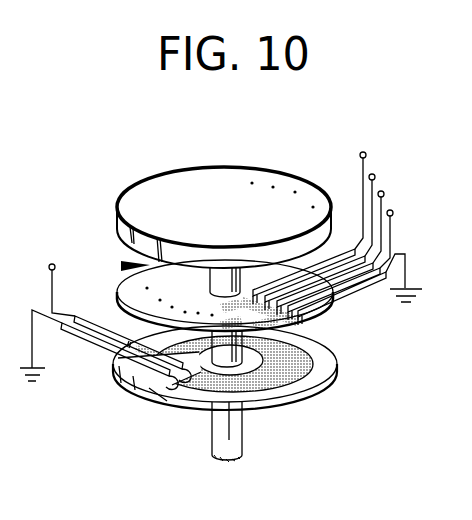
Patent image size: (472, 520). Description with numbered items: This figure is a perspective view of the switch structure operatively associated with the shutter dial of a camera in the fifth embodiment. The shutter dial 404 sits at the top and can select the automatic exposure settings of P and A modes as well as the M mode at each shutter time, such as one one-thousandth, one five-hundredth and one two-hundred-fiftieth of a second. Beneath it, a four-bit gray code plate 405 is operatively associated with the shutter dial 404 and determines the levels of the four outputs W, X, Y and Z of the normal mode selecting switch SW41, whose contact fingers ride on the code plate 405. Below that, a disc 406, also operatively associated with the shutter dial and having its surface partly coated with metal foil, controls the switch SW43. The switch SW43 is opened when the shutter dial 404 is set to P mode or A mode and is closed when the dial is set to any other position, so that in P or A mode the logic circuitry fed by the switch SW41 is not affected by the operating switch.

The shutter dial 404 is at (268, 172).
The 4-bit gray code plate 405 is at (328, 320).
The disc 406 is at (305, 383).
The normal mode selecting switch SW41 is at (360, 278).
The switch SW43 is at (97, 345).